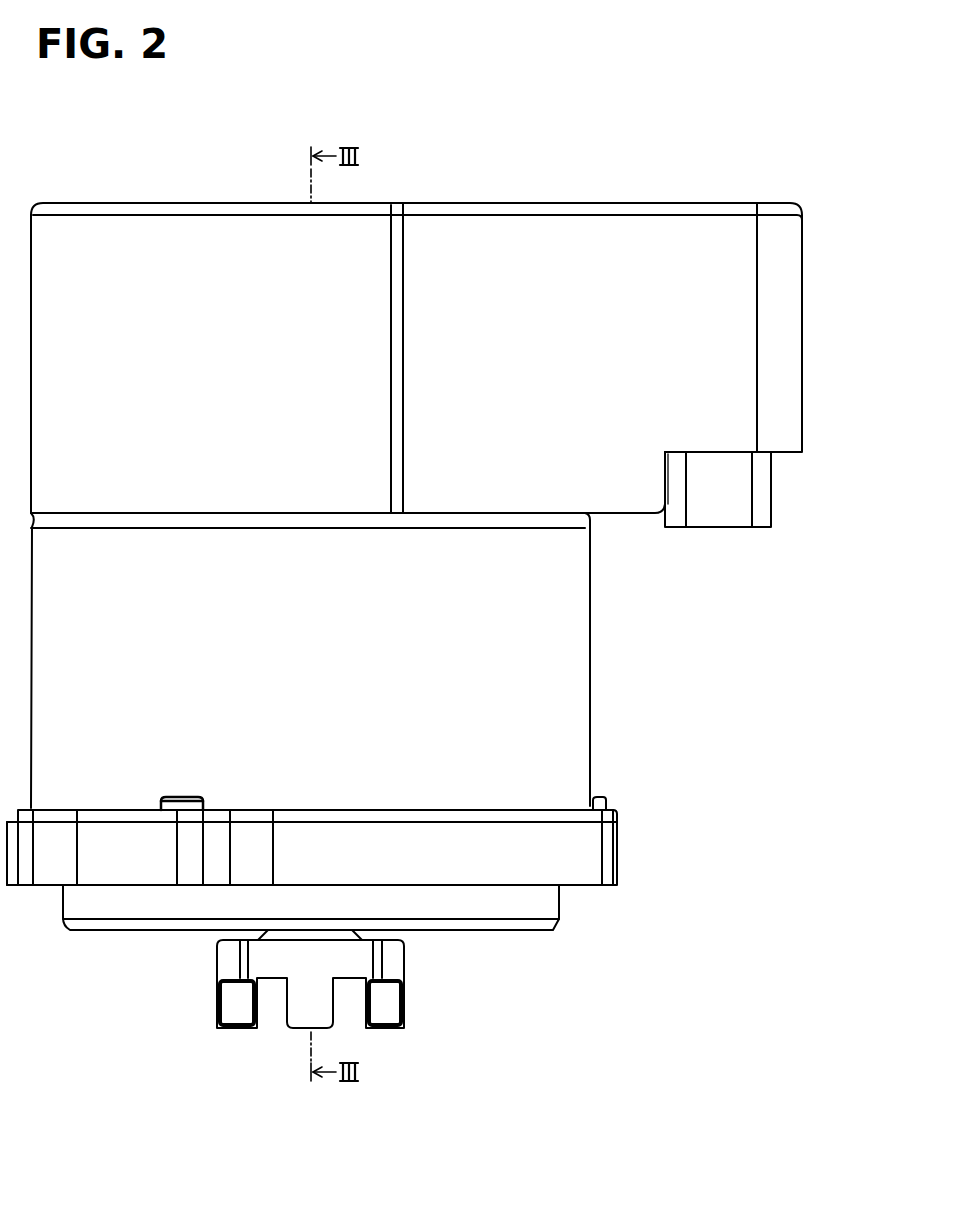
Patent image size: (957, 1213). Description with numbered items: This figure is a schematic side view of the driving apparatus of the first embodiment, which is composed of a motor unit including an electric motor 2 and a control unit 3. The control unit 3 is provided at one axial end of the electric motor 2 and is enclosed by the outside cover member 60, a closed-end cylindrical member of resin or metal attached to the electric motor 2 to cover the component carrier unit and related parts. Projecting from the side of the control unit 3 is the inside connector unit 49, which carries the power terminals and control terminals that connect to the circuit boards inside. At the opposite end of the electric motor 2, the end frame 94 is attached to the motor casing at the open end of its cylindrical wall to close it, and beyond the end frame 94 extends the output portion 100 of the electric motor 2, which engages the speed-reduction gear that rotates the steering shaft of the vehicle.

The electric motor 2 is at (593, 657).
The control unit 3 is at (802, 268).
The inside connector unit 49 is at (724, 529).
The outside cover member 60 is at (461, 248).
The end frame 94 is at (618, 852).
The output portion 100 is at (217, 1007).